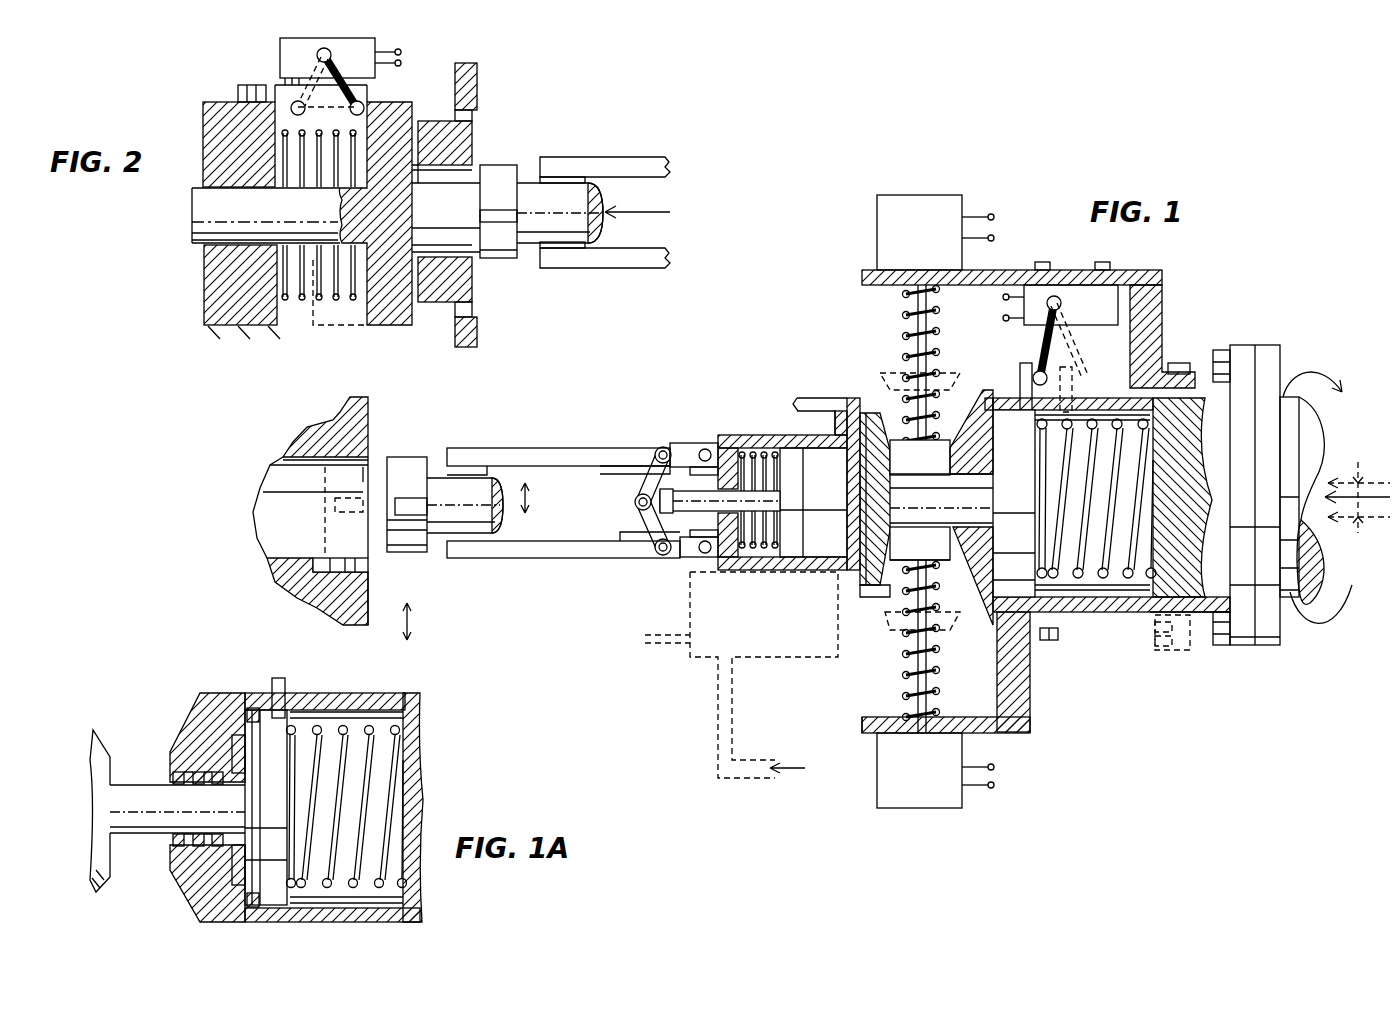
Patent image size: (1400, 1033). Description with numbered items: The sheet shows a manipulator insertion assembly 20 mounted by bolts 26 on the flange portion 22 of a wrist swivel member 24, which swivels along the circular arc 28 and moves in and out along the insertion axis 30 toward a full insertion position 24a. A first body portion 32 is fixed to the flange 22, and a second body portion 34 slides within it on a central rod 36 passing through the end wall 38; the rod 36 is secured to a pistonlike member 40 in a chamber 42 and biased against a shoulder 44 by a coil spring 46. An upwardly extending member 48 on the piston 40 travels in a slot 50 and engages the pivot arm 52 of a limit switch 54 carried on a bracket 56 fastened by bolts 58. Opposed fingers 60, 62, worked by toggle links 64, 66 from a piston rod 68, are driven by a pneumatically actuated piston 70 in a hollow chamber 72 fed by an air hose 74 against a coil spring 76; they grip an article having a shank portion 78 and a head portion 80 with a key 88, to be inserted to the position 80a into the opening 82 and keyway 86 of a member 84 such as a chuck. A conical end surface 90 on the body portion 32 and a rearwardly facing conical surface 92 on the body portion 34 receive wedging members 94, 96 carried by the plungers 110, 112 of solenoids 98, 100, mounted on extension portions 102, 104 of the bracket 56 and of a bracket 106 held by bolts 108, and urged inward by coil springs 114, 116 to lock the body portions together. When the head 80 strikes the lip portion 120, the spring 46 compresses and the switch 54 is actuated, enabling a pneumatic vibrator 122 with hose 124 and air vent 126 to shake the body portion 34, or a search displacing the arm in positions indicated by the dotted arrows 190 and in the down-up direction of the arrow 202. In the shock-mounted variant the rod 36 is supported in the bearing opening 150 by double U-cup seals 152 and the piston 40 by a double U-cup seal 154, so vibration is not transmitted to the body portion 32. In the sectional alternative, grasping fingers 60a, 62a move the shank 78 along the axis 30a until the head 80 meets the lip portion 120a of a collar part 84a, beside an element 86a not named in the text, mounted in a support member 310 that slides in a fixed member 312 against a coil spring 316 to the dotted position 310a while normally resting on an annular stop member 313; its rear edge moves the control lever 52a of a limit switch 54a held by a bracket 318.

In FIG. 1, the assembly 20 is at (1083, 668).
In FIG. 1, the flange portion 22 is at (1265, 646).
In FIG. 1, the wrist swivel member 24 is at (1293, 598).
In FIG. 1, the full insertion position 24a is at (1175, 653).
In FIG. 1, the bolts 26 is at (1222, 350).
In FIG. 1, the circular arc 28 is at (1352, 590).
In FIG. 1, the insertion axis 30 is at (1338, 478).
In FIG. 1, the first body portion 32 is at (1142, 606).
In FIG. 1A, the first body portion 32 is at (400, 910).
In FIG. 1, the second body portion 34 is at (770, 435).
In FIG. 1, the central rod 36 is at (905, 499).
In FIG. 1A, the central rod 36 is at (140, 786).
In FIG. 1, the end wall 38 is at (1000, 503).
In FIG. 1A, the end wall 38 is at (198, 878).
In FIG. 1, the pistonlike member 40 is at (995, 590).
In FIG. 1A, the pistonlike member 40 is at (273, 862).
In FIG. 1, the chamber 42 is at (1087, 595).
In FIG. 1A, the chamber 42 is at (348, 906).
In FIG. 1, the shoulder 44 is at (1005, 405).
In FIG. 1, the coil spring 46 is at (1133, 538).
In FIG. 1A, the coil spring 46 is at (392, 793).
In FIG. 1, the upwardly extending member 48 is at (1020, 368).
In FIG. 1A, the upwardly extending member 48 is at (272, 680).
In FIG. 1, the slot 50 is at (1105, 405).
In FIG. 1A, the slot 50 is at (347, 700).
In FIG. 1, the pivot arm 52 is at (1046, 346).
In FIG. 1, the limit switch control mechanism 54 is at (1090, 318).
In FIG. 1, the bracket 56 is at (1160, 300).
In FIG. 1, the bolts 58 is at (1178, 363).
In FIG. 1, the finger 60 is at (522, 448).
In FIG. 1, the finger 62 is at (553, 560).
In FIG. 1, the toggle link 64 is at (652, 480).
In FIG. 1, the toggle link 66 is at (650, 520).
In FIG. 1, the piston rod 68 is at (685, 491).
In FIG. 1, the pneumatically actuated piston 70 is at (795, 477).
In FIG. 1, the hollow chamber 72 is at (830, 565).
In FIG. 1, the air hose 74 is at (815, 398).
In FIG. 1, the coil spring 76 is at (765, 555).
In FIG. 2, the cylindrical shank portion 78 is at (560, 239).
In FIG. 1, the cylindrical shank portion 78 is at (480, 532).
In FIG. 2, the cylindrical head portion 80 is at (500, 166).
In FIG. 1, the cylindrical head portion 80 is at (407, 462).
In FIG. 1, the full insertion position 80a is at (323, 530).
In FIG. 1, the mating opening 82 is at (338, 462).
In FIG. 1, the member 84 is at (366, 594).
In FIG. 1, the keyway 86 is at (368, 565).
In FIG. 2, the key 88 is at (497, 224).
In FIG. 1, the key 88 is at (415, 516).
In FIG. 1, the conical end surface 90 is at (975, 565).
In FIG. 1, the rearwardly facing conical surface 92 is at (876, 573).
In FIG. 1, the wedging member 94 is at (958, 440).
In FIG. 1, the wedging member 96 is at (920, 560).
In FIG. 1, the solenoid 98 is at (950, 205).
In FIG. 1, the solenoid 100 is at (960, 805).
In FIG. 1, the extension portion 102 is at (993, 270).
In FIG. 1, the extension portion 104 is at (870, 730).
In FIG. 1, the bracket 106 is at (1030, 726).
In FIG. 1, the bolts 108 is at (1050, 641).
In FIG. 1, the movable plunger 110 is at (936, 330).
In FIG. 1, the movable plunger 112 is at (926, 686).
In FIG. 1, the coil spring 114 is at (930, 352).
In FIG. 1, the coil spring 116 is at (936, 652).
In FIG. 1, the lip portion 120 is at (368, 450).
In FIG. 1, the pneumatic vibrator 122 is at (775, 660).
In FIG. 1, the hose 124 is at (735, 742).
In FIG. 1, the air vent 126 is at (678, 646).
In FIG. 1A, the bearing opening 150 is at (172, 840).
In FIG. 1A, the double U-cup seals 152 is at (216, 833).
In FIG. 1A, the double U-cup seal 154 is at (258, 908).
In FIG. 1, the dotted arrows 190 is at (1358, 483).
In FIG. 1, the arrow 202 is at (530, 497).
In FIG. 2, the insertion axis 30a is at (637, 203).
In FIG. 2, the control lever 52a is at (362, 100).
In FIG. 2, the limit switch 54a is at (282, 53).
In FIG. 2, the grasping finger 60a is at (607, 158).
In FIG. 2, the grasping finger 62a is at (625, 251).
In FIG. 2, the part 84a is at (472, 306).
In FIG. 2, the bearing 86a is at (470, 262).
In FIG. 2, the lip portion 120a is at (470, 142).
In FIG. 2, the support member 310 is at (398, 318).
In FIG. 2, the full insertion position 310a is at (313, 326).
In FIG. 2, the fixed member 312 is at (256, 320).
In FIG. 2, the annular stop member 313 is at (475, 345).
In FIG. 2, the coil spring 316 is at (322, 298).
In FIG. 2, the bracket 318 is at (255, 86).